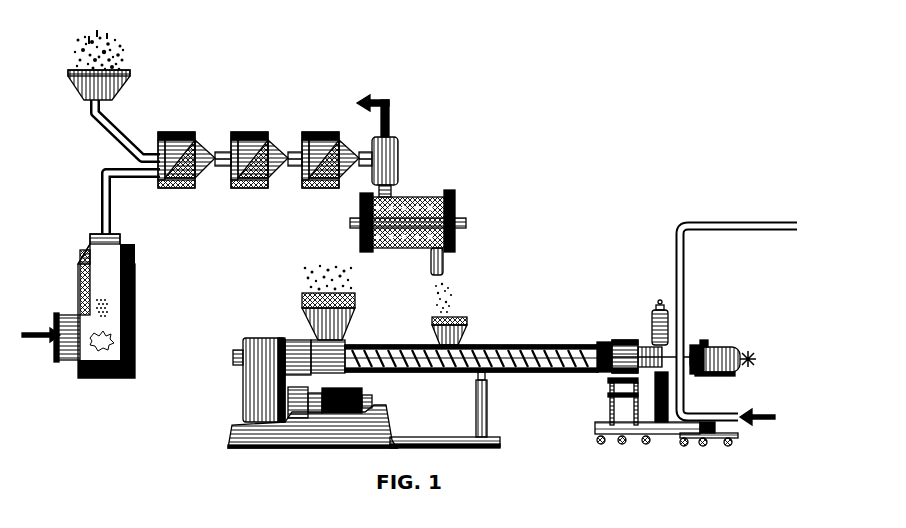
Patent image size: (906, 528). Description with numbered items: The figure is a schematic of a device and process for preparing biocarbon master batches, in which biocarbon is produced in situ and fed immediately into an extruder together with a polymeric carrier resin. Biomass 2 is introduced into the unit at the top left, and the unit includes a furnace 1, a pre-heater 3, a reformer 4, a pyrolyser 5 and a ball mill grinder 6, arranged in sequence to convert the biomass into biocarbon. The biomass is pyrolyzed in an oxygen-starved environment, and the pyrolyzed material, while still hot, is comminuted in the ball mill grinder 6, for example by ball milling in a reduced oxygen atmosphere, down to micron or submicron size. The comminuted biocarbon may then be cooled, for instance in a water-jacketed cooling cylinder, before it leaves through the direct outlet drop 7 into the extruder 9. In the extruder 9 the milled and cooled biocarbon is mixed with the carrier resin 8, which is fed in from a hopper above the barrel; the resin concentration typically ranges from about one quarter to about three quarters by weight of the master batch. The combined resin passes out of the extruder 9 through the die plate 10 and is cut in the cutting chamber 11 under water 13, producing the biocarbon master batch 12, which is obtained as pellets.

The furnace 1 is at (78, 277).
The biomass 2 is at (122, 50).
The pre-heater 3 is at (178, 132).
The reformer 4 is at (247, 132).
The pyrolyser 5 is at (320, 132).
The ball mill grinder 6 is at (415, 181).
The direct outlet drop 7 is at (455, 297).
The carrier resin 8 is at (298, 275).
The extruder 9 is at (567, 345).
The die plate 10 is at (643, 335).
The cutting chamber 11 is at (701, 333).
The biocarbon master batch 12 is at (805, 232).
The water 13 is at (782, 414).